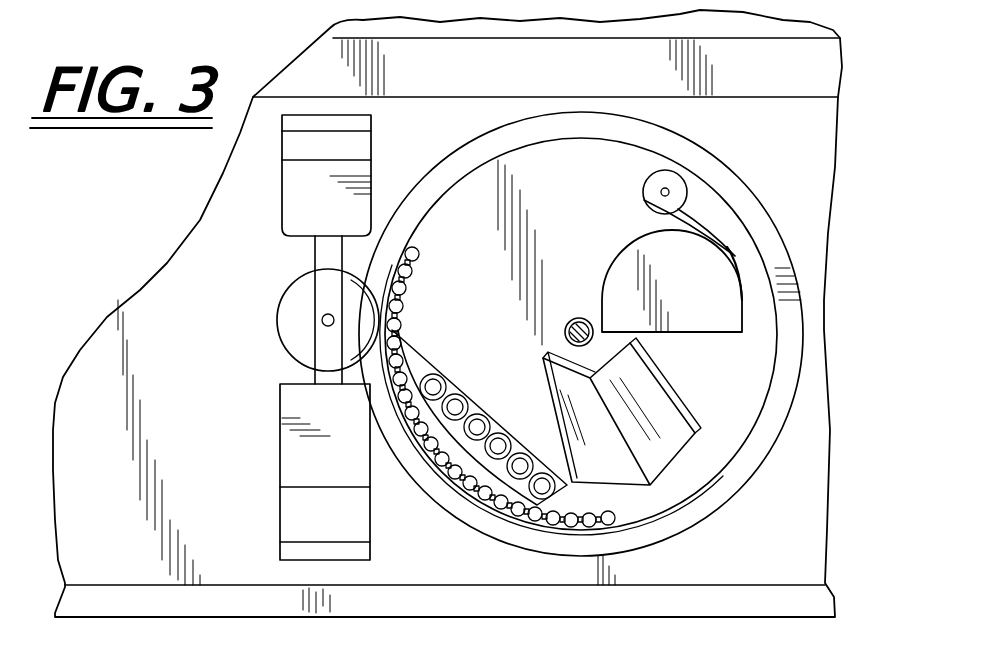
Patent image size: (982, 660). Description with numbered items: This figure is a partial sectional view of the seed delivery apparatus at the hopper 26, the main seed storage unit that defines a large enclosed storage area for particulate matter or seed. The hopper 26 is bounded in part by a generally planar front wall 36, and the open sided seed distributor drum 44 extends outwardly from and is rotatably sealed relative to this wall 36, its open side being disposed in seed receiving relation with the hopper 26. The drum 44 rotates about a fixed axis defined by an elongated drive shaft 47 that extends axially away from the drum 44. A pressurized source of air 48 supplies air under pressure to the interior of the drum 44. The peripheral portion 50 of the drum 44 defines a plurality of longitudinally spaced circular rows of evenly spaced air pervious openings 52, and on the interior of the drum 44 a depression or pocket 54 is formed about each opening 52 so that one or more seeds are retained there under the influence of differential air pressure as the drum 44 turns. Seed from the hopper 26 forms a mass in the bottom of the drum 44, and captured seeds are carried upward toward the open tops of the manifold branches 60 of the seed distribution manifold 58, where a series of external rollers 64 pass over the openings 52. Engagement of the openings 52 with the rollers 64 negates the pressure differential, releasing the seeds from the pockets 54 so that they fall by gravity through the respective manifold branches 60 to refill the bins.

The hopper 26 is at (163, 311).
The front wall 36 is at (238, 267).
The seed distributor drum 44 is at (720, 192).
The drive shaft 47 is at (582, 318).
The pressurized source of air 48 is at (692, 306).
The peripheral portion 50 is at (534, 524).
The air pervious openings 52 is at (478, 498).
The pocket 54 is at (446, 457).
The seed distribution manifold 58 is at (509, 398).
The manifold branches 60 is at (492, 410).
The external rollers 64 is at (298, 350).